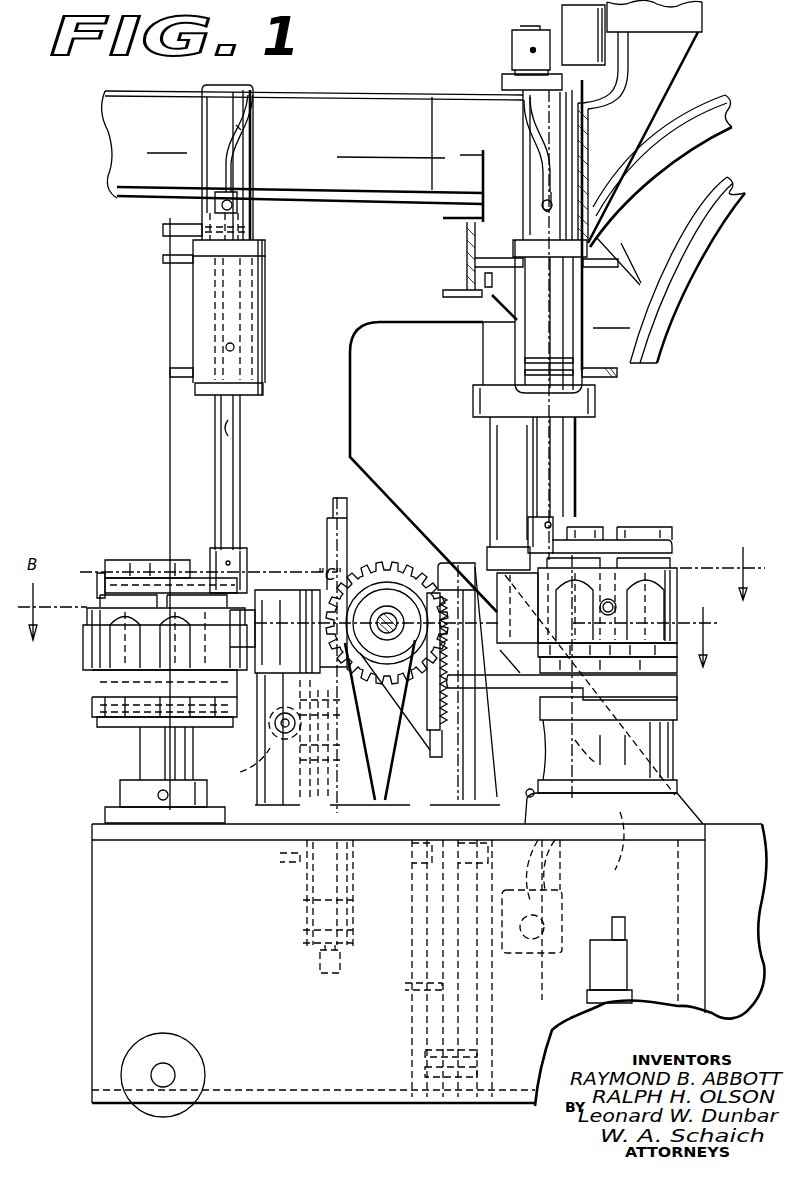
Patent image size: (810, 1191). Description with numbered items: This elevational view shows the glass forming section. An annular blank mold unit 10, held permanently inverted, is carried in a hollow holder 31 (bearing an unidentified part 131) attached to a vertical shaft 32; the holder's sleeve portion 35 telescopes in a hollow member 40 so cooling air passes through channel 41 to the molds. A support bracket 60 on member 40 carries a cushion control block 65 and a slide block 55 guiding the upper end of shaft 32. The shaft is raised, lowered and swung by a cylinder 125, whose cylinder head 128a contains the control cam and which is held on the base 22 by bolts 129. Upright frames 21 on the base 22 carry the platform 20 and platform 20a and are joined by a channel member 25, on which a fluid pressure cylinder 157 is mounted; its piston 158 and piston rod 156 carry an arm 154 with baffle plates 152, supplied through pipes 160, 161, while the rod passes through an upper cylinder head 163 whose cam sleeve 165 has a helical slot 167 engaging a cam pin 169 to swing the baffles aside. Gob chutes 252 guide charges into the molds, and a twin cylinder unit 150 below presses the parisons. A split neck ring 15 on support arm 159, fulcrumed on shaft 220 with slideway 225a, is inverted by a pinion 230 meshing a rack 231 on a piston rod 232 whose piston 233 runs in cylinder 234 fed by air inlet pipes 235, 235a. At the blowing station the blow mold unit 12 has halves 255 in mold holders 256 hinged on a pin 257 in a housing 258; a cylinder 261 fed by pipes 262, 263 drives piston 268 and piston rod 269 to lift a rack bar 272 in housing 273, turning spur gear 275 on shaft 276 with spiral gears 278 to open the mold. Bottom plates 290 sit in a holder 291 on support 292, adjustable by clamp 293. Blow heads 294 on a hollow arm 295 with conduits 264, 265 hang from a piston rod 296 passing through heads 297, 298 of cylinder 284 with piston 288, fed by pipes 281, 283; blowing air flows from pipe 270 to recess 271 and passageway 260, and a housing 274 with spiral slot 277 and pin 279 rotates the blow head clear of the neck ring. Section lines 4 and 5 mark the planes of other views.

The section line 4- 4 is at (391, 599).
The section line 5- 5 is at (310, 543).
The annular blank mold unit 10 is at (709, 536).
The blow mold unit 12 is at (113, 523).
The split neck ring 15 is at (680, 650).
The platform 20 is at (628, 913).
The platform 20a is at (300, 1093).
The upright frame structure 21 is at (325, 359).
The base 22 is at (156, 894).
The channel member 25 is at (467, 250).
The hollow holder 31 is at (670, 590).
The vertical shaft 32 is at (532, 28).
The hollow sleeve portion 35 is at (503, 435).
The hollow member 40 is at (490, 354).
The channel 41 is at (366, 146).
The slide block 55 is at (588, 36).
The support bracket 60 is at (660, 58).
The cushion control block 65 is at (655, 24).
The cylinder 125 is at (608, 734).
The cylinder head 128a is at (565, 915).
The bolts 129 is at (614, 840).
The box 131 is at (525, 597).
The twin cylinder unit 150 is at (670, 760).
The baffle plate 152 is at (625, 525).
The arm 154 is at (640, 545).
The piston rod 156 is at (555, 441).
The fluid pressure cylinder 157 is at (550, 332).
The piston 158 is at (525, 372).
The support arm 159 is at (530, 693).
The pipe 160 is at (606, 268).
The pipe 161 is at (617, 373).
The upper cylinder head 163 is at (588, 243).
The cam sleeve 165 is at (560, 136).
The helical slot 167 is at (540, 140).
The cam pin 169 is at (542, 205).
The shaft 220 is at (386, 613).
The slideway 225a is at (440, 760).
The pinion 230 is at (400, 562).
The pinion rack 231 is at (452, 565).
The piston rod 232 is at (440, 985).
The piston 233 is at (430, 1050).
The cylinder 234 is at (425, 968).
The air inlet pipe 235 is at (395, 1075).
The air inlet pipe 235a is at (412, 880).
The gob chute 252 is at (695, 135).
The blow mold halves 255 is at (113, 680).
The mold holders 256 is at (100, 650).
The pin 257 is at (285, 592).
The housing 258 is at (262, 808).
The passageway 260 is at (232, 424).
The cylinder 261 is at (305, 895).
The pipe 262 is at (318, 955).
The pipe 263 is at (280, 858).
The conduit 264 is at (100, 575).
The conduit 265 is at (195, 555).
The piston 268 is at (300, 935).
The piston rod 269 is at (310, 905).
The pipe 270 is at (163, 231).
The circular recess 271 is at (258, 226).
The rack bar 272 is at (325, 760).
The housing 273 is at (325, 705).
The housing 274 is at (252, 150).
The spur gear 275 is at (235, 762).
The horizontal shaft 276 is at (276, 729).
The spiral slot 277 is at (248, 150).
The spiral gears 278 is at (270, 723).
The pin 279 is at (221, 206).
The pipe 281 is at (163, 259).
The pipe 283 is at (170, 372).
The fluid pressure cylinder 284 is at (193, 300).
The piston 288 is at (234, 345).
The bottom plates 290 is at (95, 702).
The holder 291 is at (100, 723).
The support 292 is at (128, 748).
The clamp 293 is at (125, 793).
The blow heads 294 is at (100, 602).
The hollow arm 295 is at (168, 572).
The piston rod 296 is at (236, 460).
The head 297 is at (195, 388).
The upper cylinder head 298 is at (265, 246).